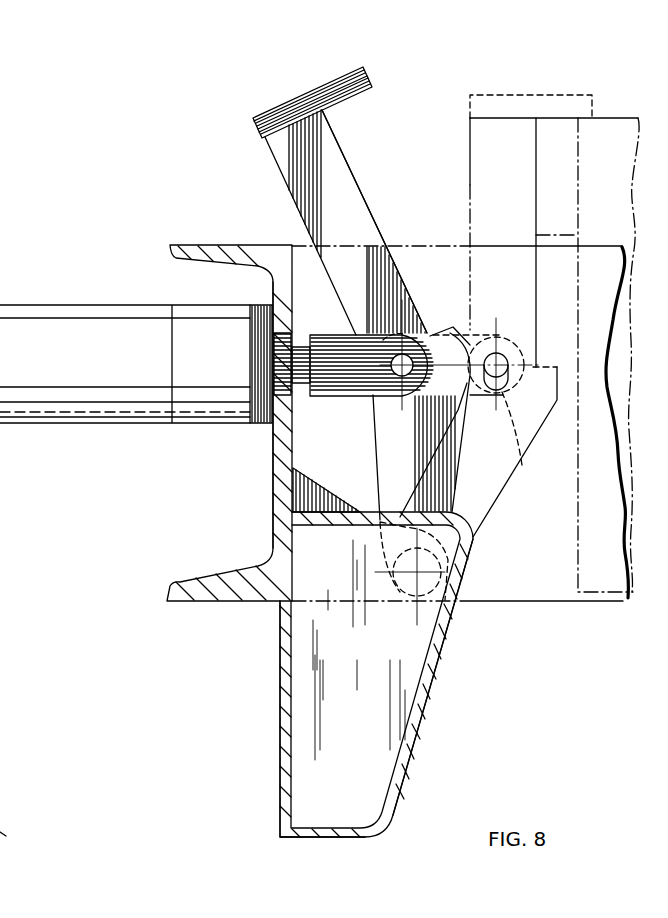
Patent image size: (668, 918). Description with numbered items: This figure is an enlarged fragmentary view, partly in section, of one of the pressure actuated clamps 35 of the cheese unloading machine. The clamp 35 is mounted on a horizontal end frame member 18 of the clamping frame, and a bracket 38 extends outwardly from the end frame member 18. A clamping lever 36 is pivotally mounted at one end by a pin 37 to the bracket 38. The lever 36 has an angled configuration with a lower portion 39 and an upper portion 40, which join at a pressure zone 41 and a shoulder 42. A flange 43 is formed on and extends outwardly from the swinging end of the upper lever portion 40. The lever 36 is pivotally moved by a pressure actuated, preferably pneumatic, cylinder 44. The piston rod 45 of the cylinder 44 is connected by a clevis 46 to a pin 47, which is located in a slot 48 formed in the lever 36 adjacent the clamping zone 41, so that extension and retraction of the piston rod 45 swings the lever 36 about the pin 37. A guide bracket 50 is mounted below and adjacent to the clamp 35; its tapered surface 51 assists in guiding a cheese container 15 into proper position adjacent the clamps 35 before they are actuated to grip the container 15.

The cheese container 15 is at (612, 118).
The end frame member 18 is at (272, 488).
The clamp 35 is at (155, 350).
The clamping lever 36 is at (353, 178).
The pin 37 is at (361, 674).
The bracket 38 is at (292, 505).
The lower portion 39 is at (362, 473).
The upper portion 40 is at (361, 331).
The pressure zone 41 is at (465, 334).
The shoulder 42 is at (449, 331).
The flange 43 is at (327, 86).
The cylinder 44 is at (140, 310).
The piston rod 45 is at (272, 425).
The clevis 46 is at (335, 336).
The pin 47 is at (405, 397).
The slot 48 is at (512, 463).
The guide bracket 50 is at (280, 797).
The tapered surface 51 is at (427, 700).